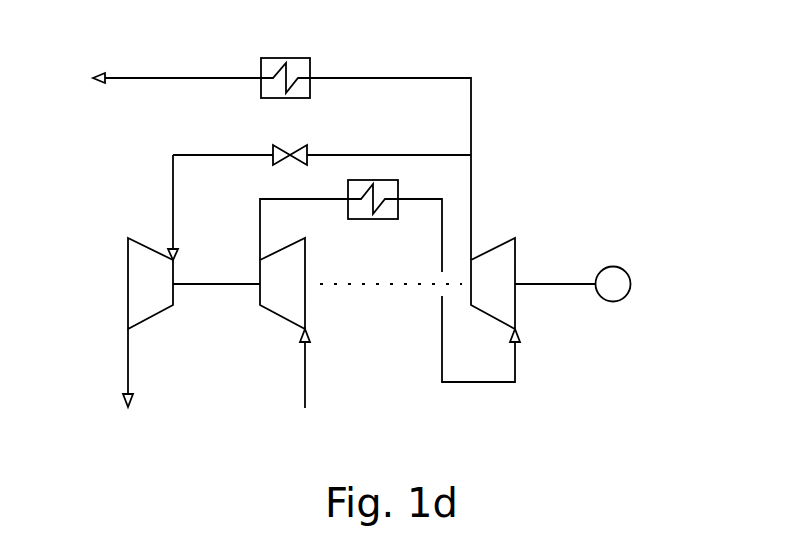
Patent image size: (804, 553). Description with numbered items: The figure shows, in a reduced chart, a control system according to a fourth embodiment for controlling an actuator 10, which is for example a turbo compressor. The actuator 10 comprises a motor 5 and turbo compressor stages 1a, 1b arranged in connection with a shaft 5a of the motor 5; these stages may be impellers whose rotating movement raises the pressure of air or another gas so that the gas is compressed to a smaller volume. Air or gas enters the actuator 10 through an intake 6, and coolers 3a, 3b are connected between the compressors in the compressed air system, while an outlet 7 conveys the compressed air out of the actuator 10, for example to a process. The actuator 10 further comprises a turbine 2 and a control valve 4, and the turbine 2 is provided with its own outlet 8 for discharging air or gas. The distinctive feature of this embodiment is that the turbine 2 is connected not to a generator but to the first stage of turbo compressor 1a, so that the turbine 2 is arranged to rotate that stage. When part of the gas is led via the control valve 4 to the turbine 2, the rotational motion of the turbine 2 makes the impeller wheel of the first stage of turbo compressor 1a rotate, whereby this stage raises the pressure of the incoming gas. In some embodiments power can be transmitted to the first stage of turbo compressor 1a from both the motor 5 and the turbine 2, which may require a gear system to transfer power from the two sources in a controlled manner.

The actuator 10 is at (553, 62).
The outlet 7 is at (140, 80).
The cooler 3b is at (262, 90).
The control valve 4 is at (288, 146).
The cooler 3a is at (397, 182).
The turbine 2 is at (128, 305).
The outlet 8 is at (128, 392).
The first stage of turbo compressor 1a is at (258, 292).
The intake 6 is at (305, 393).
The turbo compressor 1b is at (517, 305).
The shaft 5a is at (575, 283).
The motor 5 is at (631, 278).